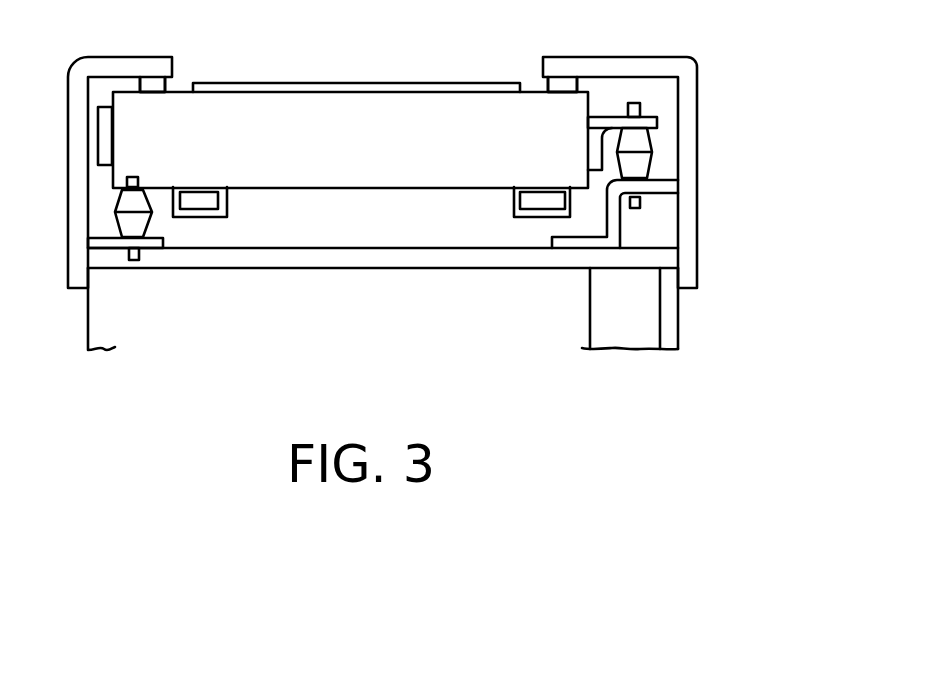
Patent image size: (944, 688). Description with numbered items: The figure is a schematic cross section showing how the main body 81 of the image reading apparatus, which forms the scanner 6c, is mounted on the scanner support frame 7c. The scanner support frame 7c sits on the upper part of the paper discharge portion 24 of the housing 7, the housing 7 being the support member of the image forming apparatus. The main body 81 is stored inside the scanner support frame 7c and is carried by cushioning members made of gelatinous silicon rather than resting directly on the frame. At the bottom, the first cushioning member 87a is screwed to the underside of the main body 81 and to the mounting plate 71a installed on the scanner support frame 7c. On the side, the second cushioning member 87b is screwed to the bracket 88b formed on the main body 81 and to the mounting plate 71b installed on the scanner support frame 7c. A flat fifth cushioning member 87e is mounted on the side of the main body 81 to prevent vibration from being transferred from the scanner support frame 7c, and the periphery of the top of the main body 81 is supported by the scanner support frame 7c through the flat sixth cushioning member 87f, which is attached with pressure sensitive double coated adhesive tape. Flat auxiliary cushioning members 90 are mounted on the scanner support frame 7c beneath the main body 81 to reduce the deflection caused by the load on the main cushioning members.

The main body 81 is at (318, 97).
The sixth cushioning member 87f is at (168, 80).
The fifth cushioning member 87e is at (98, 140).
The first cushioning member 87a is at (92, 225).
The mounting plate 71a is at (95, 246).
The paper discharge portion 24 is at (97, 322).
The auxiliary cushioning member 90 is at (226, 199).
The scanner 6c is at (591, 100).
The bracket 88b is at (657, 124).
The scanner support frame 7c is at (698, 133).
The second cushioning member 87b is at (652, 163).
The mounting plate 71b is at (622, 228).
The housing 7 is at (678, 325).